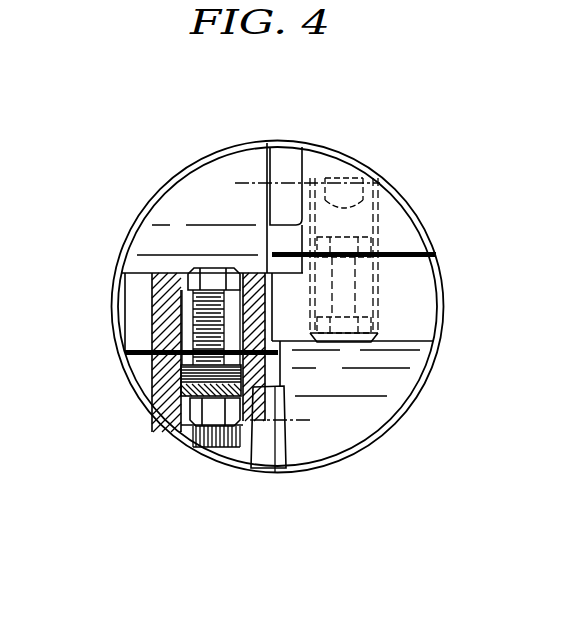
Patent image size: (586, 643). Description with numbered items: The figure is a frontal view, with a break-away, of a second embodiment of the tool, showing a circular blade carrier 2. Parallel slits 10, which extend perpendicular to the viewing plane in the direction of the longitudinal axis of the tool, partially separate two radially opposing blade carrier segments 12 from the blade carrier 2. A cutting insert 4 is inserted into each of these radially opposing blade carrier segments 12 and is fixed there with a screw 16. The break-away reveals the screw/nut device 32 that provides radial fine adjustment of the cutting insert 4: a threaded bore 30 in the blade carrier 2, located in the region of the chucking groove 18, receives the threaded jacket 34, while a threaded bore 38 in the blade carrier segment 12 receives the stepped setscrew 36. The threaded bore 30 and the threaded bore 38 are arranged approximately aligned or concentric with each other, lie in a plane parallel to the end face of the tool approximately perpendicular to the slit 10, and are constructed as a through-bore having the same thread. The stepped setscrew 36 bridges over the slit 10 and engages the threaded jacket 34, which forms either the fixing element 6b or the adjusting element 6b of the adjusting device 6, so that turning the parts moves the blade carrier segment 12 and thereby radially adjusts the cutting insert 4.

The blade carrier 2 is at (418, 293).
The cutting insert 4 is at (267, 142).
The adjusting device 6 is at (376, 146).
The fixing element or adjusting element 6b is at (381, 175).
The slit 10 is at (430, 245).
The blade carrier segment 12 is at (393, 228).
The screw 16 is at (278, 185).
The chucking groove 18 is at (206, 198).
The threaded bore 30 is at (152, 294).
The screw/nut device 32 is at (196, 492).
The threaded jacket 34 is at (153, 311).
The stepped setscrew 36 is at (168, 418).
The threaded bore 38 is at (178, 393).